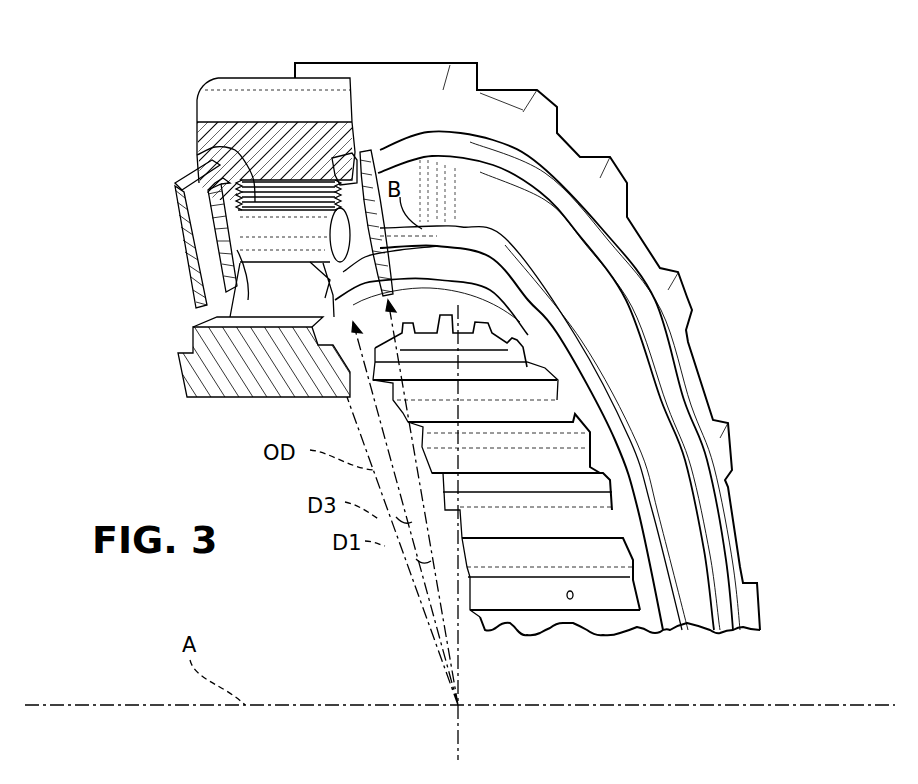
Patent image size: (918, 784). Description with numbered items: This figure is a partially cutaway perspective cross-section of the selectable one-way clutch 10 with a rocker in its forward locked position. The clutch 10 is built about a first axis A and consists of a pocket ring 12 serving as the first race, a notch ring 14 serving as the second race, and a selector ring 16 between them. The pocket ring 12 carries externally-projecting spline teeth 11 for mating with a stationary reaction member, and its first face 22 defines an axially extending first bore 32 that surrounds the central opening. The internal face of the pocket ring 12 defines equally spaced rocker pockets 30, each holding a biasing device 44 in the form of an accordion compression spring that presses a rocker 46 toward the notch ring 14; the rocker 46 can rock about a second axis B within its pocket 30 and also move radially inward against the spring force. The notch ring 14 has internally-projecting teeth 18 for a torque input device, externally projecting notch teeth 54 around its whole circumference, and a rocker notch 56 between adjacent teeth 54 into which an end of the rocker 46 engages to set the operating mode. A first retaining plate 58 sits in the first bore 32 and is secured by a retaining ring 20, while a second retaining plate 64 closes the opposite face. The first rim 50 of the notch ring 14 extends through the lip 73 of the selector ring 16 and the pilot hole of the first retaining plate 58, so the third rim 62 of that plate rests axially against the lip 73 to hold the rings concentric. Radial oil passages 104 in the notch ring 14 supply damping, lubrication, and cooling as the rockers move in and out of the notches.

The selectable one-way clutch 10 is at (137, 61).
The spline teeth 11 is at (390, 72).
The pocket ring 12 is at (205, 135).
The notch ring 14 is at (200, 370).
The selector ring 16 is at (207, 215).
The internally-projecting teeth 18 is at (537, 527).
The retaining ring 20 is at (173, 203).
The first face 22 is at (488, 113).
The rocker pocket 30 is at (279, 180).
The first bore 32 is at (621, 256).
The biasing device 44 is at (197, 150).
The rocker 46 is at (200, 295).
The first rim 50 is at (310, 317).
The notch teeth 54 is at (193, 320).
The rocker notch 56 is at (323, 299).
The first retaining plate 58 is at (672, 473).
The third rim 62 is at (593, 373).
The second retaining plate 64 is at (197, 210).
The lip 73 is at (392, 287).
The radial oil passages 104 is at (500, 425).